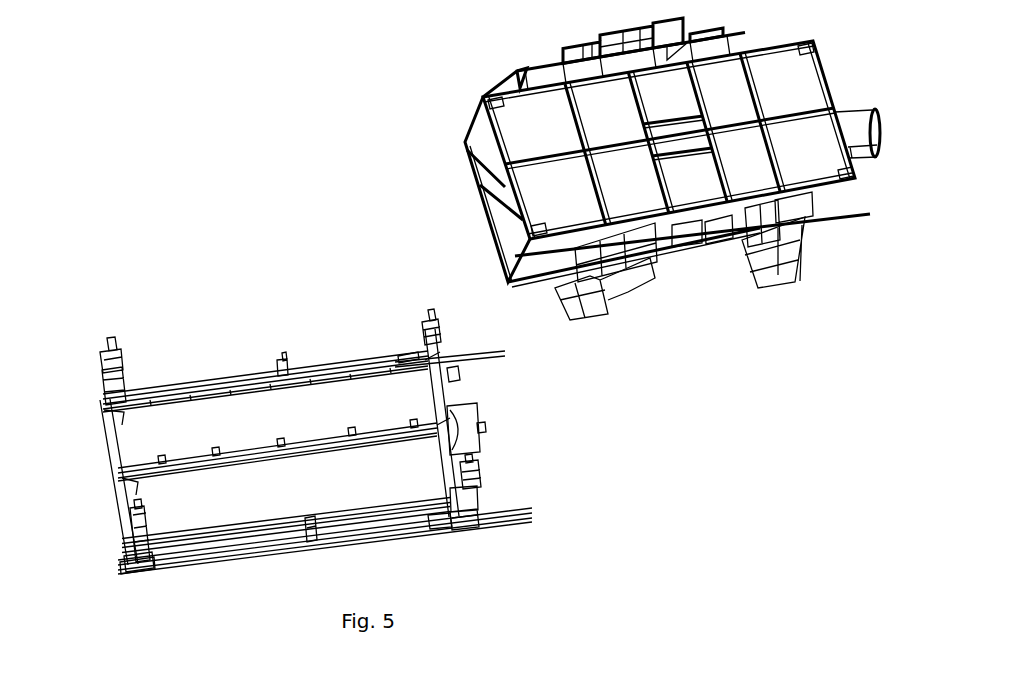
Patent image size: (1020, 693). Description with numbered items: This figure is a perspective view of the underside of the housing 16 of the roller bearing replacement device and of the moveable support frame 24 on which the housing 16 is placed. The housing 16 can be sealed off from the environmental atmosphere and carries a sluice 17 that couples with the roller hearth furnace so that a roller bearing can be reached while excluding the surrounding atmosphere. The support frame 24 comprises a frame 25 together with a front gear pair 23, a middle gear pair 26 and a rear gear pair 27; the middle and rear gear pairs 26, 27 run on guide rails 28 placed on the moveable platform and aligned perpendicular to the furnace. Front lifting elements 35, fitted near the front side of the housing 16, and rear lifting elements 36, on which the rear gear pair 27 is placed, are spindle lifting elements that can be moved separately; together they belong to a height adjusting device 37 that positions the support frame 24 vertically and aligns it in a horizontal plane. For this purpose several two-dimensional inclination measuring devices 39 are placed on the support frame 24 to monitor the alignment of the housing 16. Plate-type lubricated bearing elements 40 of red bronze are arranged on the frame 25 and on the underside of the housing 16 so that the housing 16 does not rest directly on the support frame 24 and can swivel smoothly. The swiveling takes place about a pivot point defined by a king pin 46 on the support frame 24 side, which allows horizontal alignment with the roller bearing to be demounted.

The housing 16 is at (450, 127).
The sluice 17 is at (848, 112).
The front gear pair 23 is at (472, 535).
The support frame 24 is at (86, 438).
The frame 25 is at (382, 358).
The middle gear pair 26 is at (440, 535).
The rear gear pair 27 is at (148, 575).
The guide rails 28 is at (497, 362).
The front lifting element 35 is at (426, 332).
The rear lifting element 36 is at (127, 388).
The height adjusting device 37 is at (315, 430).
The inclination measuring device 39 is at (116, 442).
The lubricated bearing element 40 is at (496, 100).
The king pin 46 is at (486, 427).